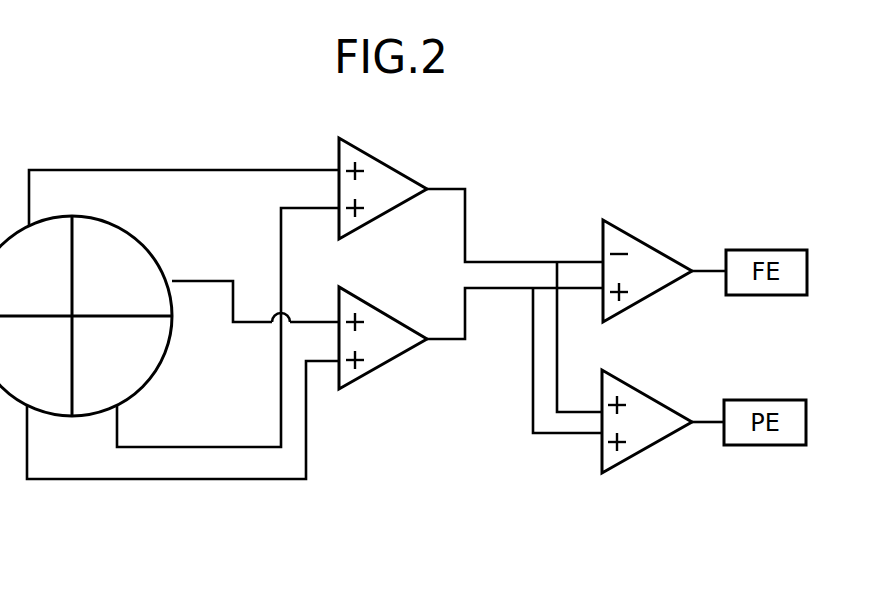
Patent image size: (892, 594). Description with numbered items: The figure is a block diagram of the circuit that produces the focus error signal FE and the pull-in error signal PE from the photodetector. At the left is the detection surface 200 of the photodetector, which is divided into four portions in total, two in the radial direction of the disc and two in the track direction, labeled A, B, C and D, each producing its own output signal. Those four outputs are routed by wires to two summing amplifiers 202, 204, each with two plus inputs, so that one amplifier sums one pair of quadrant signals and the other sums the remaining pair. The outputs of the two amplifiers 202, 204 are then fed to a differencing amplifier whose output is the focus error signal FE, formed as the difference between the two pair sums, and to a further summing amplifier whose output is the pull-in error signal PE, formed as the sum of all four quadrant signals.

The detection surface 200 is at (150, 250).
The adder amplifier 202 is at (370, 305).
The adder amplifier 204 is at (385, 164).